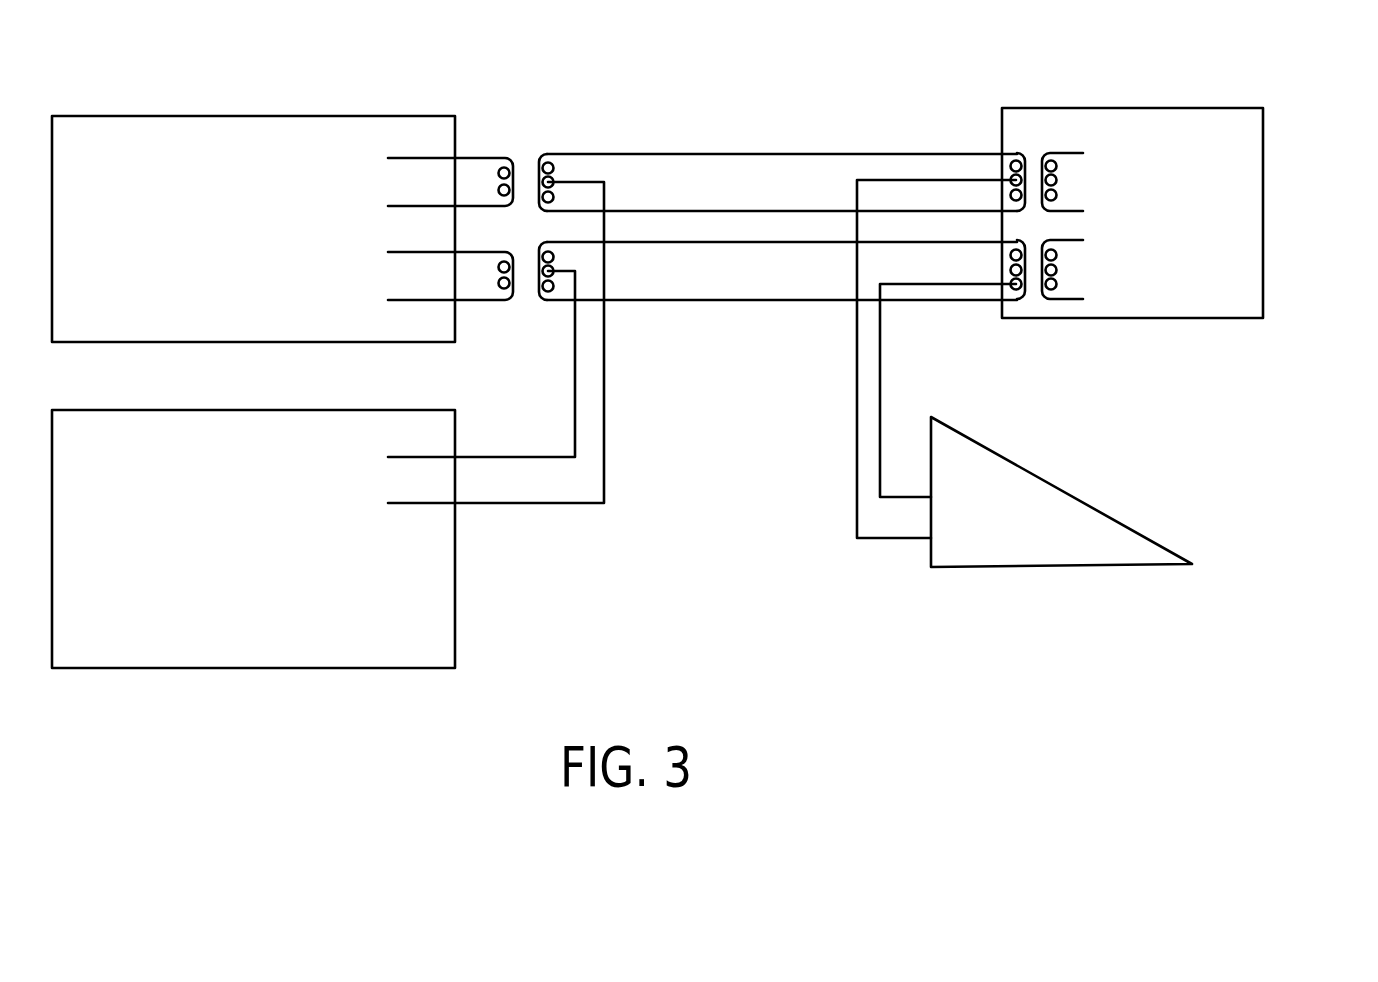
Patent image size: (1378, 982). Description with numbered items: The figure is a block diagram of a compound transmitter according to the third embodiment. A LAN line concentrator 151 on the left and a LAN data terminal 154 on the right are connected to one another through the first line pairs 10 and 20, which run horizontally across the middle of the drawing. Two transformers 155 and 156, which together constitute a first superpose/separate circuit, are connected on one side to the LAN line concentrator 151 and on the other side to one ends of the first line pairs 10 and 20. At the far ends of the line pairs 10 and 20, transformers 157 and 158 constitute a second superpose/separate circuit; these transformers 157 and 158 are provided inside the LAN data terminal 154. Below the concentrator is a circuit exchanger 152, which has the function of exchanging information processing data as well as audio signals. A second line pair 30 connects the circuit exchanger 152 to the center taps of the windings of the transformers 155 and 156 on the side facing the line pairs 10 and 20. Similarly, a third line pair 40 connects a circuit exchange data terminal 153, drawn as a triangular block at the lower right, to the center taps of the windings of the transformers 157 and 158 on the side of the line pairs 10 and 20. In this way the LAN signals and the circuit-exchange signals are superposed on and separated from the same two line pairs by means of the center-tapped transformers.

The first line pair 10 is at (705, 210).
The first line pair 20 is at (702, 242).
The second line pair 30 is at (492, 457).
The third line pair 40 is at (880, 457).
The LAN line concentrator 151 is at (152, 135).
The circuit exchanger 152 is at (192, 473).
The circuit exchange data terminal 153 is at (1058, 508).
The LAN data terminal 154 is at (1132, 123).
The transformer 155 is at (527, 163).
The transformer 156 is at (530, 285).
The transformer 157 is at (1033, 157).
The transformer 158 is at (1033, 292).